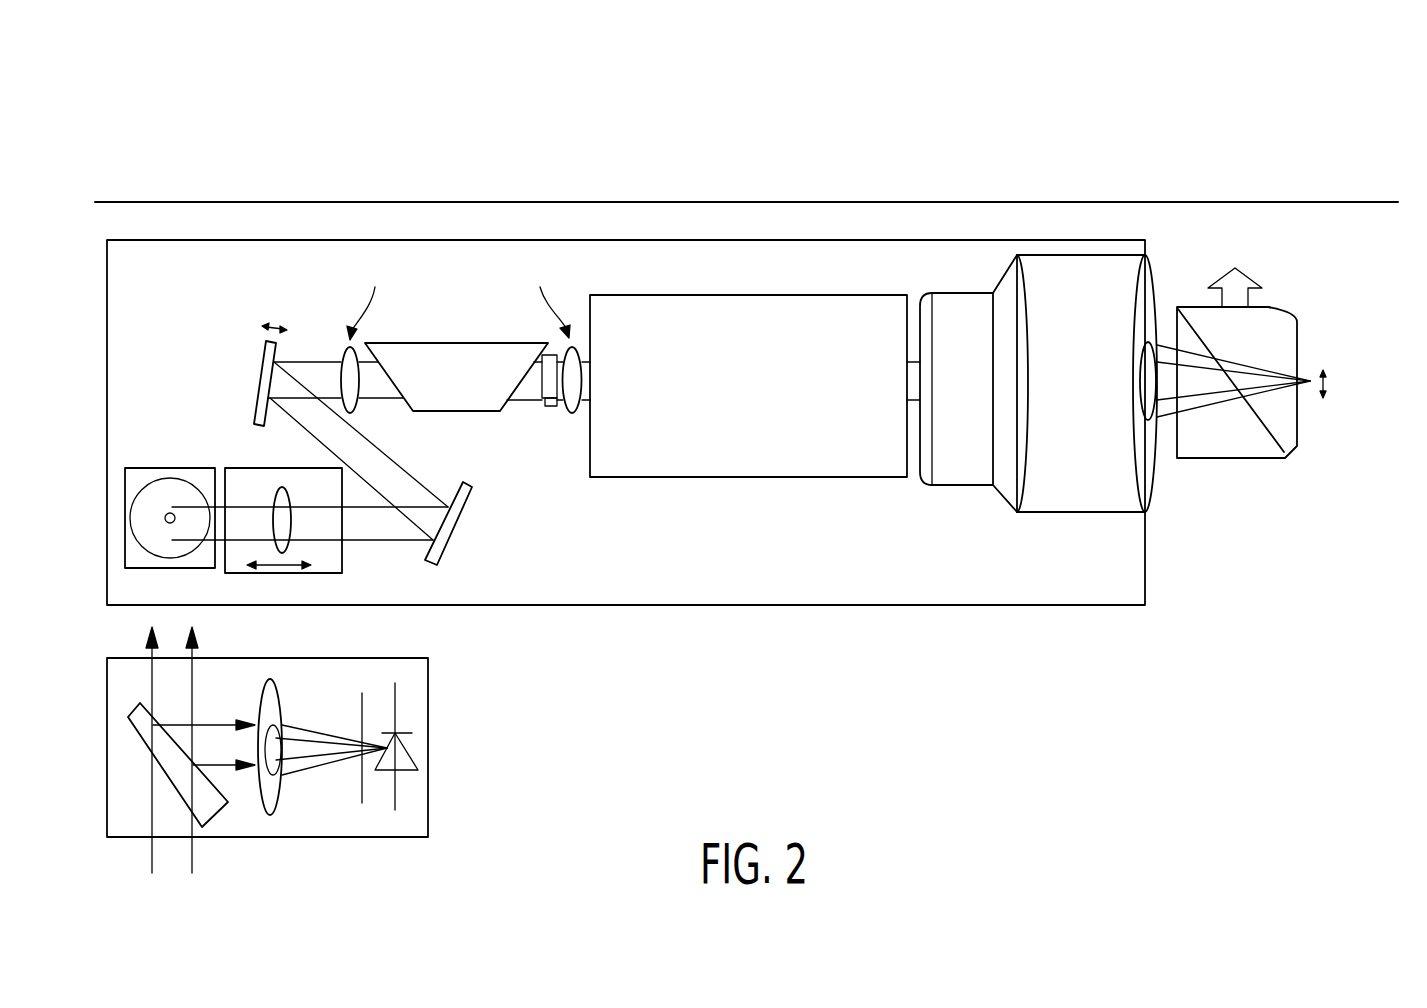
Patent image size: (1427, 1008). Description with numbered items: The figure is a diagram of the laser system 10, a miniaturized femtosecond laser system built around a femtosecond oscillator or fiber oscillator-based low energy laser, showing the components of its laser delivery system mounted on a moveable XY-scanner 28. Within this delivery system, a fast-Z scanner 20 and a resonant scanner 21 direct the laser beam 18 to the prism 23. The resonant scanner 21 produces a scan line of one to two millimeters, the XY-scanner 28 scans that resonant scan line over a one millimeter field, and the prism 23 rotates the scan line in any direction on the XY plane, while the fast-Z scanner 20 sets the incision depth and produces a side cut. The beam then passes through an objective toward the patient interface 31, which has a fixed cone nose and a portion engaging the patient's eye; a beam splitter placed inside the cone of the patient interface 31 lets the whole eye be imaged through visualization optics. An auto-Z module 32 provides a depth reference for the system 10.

The laser system 10 is at (276, 88).
The moveable XY-scanner 28 is at (632, 201).
The laser beam 18 is at (210, 507).
The resonant scanner 21 is at (268, 340).
The prism 23 is at (480, 412).
The fast-Z scanner 20 is at (320, 573).
The auto-Z module 32 is at (428, 837).
The patient interface 31 is at (1292, 318).